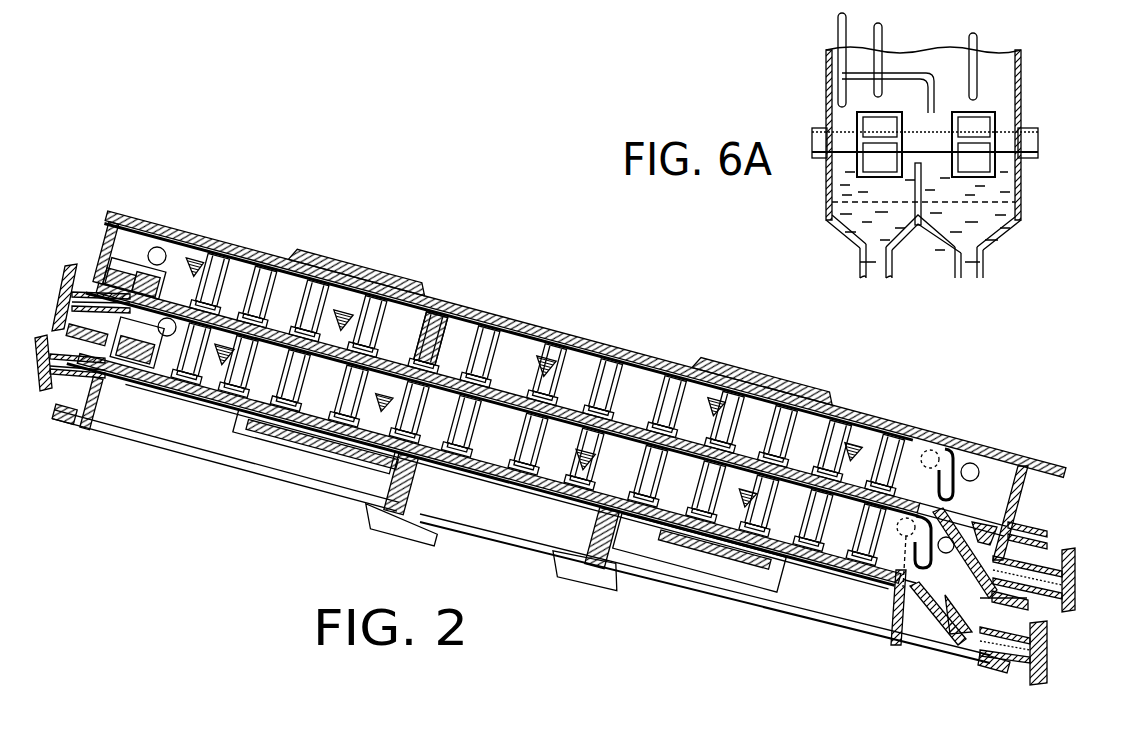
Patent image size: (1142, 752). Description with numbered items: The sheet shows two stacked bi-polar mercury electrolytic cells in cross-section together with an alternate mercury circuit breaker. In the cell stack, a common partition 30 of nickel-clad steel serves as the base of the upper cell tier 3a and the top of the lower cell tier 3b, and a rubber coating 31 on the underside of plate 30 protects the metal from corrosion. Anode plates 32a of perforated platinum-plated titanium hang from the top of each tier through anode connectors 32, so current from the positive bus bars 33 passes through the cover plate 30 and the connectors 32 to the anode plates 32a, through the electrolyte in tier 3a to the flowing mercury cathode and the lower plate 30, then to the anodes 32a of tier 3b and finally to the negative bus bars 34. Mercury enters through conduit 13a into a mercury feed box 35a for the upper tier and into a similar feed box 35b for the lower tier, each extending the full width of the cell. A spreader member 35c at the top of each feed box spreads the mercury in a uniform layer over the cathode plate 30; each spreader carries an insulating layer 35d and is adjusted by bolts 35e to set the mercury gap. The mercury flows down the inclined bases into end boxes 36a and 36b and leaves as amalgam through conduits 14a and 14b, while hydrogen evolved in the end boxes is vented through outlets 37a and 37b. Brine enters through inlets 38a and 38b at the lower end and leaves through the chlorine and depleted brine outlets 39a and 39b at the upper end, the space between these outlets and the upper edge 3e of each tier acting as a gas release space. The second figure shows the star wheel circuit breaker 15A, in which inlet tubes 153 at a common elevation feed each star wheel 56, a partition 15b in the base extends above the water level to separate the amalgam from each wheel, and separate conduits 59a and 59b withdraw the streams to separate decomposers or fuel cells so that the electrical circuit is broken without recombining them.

In FIG. 2, the common partition 30 is at (612, 346).
In FIG. 2, the rubber coating 31 is at (508, 430).
In FIG. 2, the anode connectors 32 is at (450, 330).
In FIG. 2, the anode plates 32a is at (512, 432).
In FIG. 2, the positive bus bars 33 is at (380, 255).
In FIG. 2, the negative bus bars 34 is at (294, 440).
In FIG. 2, the cell tier 3a is at (870, 450).
In FIG. 2, the cell tier 3b is at (42, 364).
In FIG. 2, the upper edge 3e is at (152, 247).
In FIG. 2, the conduit 13a is at (58, 300).
In FIG. 2, the conduit 14a is at (1070, 584).
In FIG. 2, the conduit 14b is at (1047, 655).
In FIG. 2, the mercury feed box 35a is at (140, 268).
In FIG. 2, the mercury feed box 35b is at (110, 408).
In FIG. 2, the spreader member 35c is at (170, 282).
In FIG. 2, the insulating layer 35d is at (128, 345).
In FIG. 2, the bolts 35e is at (128, 268).
In FIG. 2, the end box 36a is at (1003, 484).
In FIG. 2, the end box 36b is at (953, 570).
In FIG. 2, the hydrogen outlet 37a is at (1007, 440).
In FIG. 2, the hydrogen outlet 37b is at (952, 538).
In FIG. 2, the brine inlet 38a is at (935, 448).
In FIG. 2, the brine inlet 38b is at (900, 590).
In FIG. 2, the chlorine and depleted brine outlet 39a is at (162, 248).
In FIG. 2, the chlorine and depleted brine outlet 39b is at (132, 406).
In FIG. 6A, the inlet tubes 153 is at (971, 38).
In FIG. 6A, the star wheel circuit breaker 15A is at (817, 103).
In FIG. 6A, the partition 15b is at (921, 226).
In FIG. 6A, the star wheel 56 is at (858, 160).
In FIG. 6A, the outlet conduit 59a is at (863, 266).
In FIG. 6A, the outlet conduit 59b is at (978, 266).